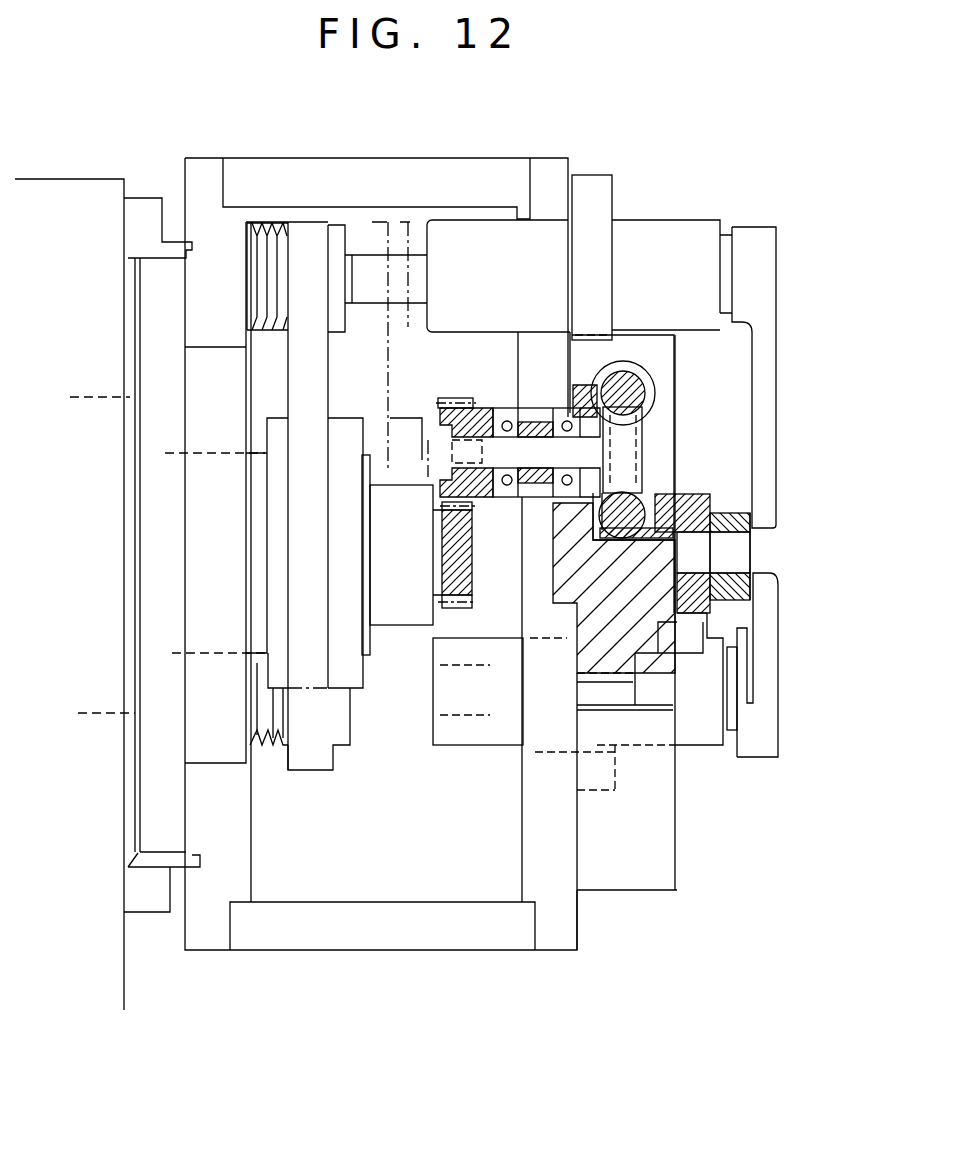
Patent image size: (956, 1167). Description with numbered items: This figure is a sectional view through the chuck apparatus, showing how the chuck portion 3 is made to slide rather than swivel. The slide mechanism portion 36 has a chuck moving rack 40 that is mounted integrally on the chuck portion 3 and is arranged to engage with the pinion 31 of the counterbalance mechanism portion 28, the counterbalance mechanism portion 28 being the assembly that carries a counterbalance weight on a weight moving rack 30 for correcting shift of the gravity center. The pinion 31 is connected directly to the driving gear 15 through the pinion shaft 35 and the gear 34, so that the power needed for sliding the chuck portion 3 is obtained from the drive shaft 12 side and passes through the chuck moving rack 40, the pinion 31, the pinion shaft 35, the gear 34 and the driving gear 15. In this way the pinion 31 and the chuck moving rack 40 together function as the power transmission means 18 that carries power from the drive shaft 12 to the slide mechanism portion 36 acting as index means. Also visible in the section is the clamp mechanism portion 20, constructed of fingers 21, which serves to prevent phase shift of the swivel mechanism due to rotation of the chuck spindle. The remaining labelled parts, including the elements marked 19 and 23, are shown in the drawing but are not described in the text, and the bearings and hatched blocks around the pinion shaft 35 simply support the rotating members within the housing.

The chuck portion 3 is at (724, 497).
The drive shaft 12 is at (400, 605).
The driving gear 15 is at (455, 608).
The power transmission means 18 is at (583, 537).
The bearing sleeve 19 is at (482, 517).
The clamp mechanism portion 20 is at (752, 218).
The fingers 21 is at (767, 408).
The spacer block 23 is at (683, 220).
The counterbalance mechanism portion 28 is at (672, 380).
The weight moving rack 30 is at (655, 375).
The pinion 31 is at (630, 440).
The gear 34 is at (443, 398).
The pinion shaft 35 is at (533, 448).
The slide mechanism portion 36 is at (738, 490).
The chuck moving rack 40 is at (668, 482).